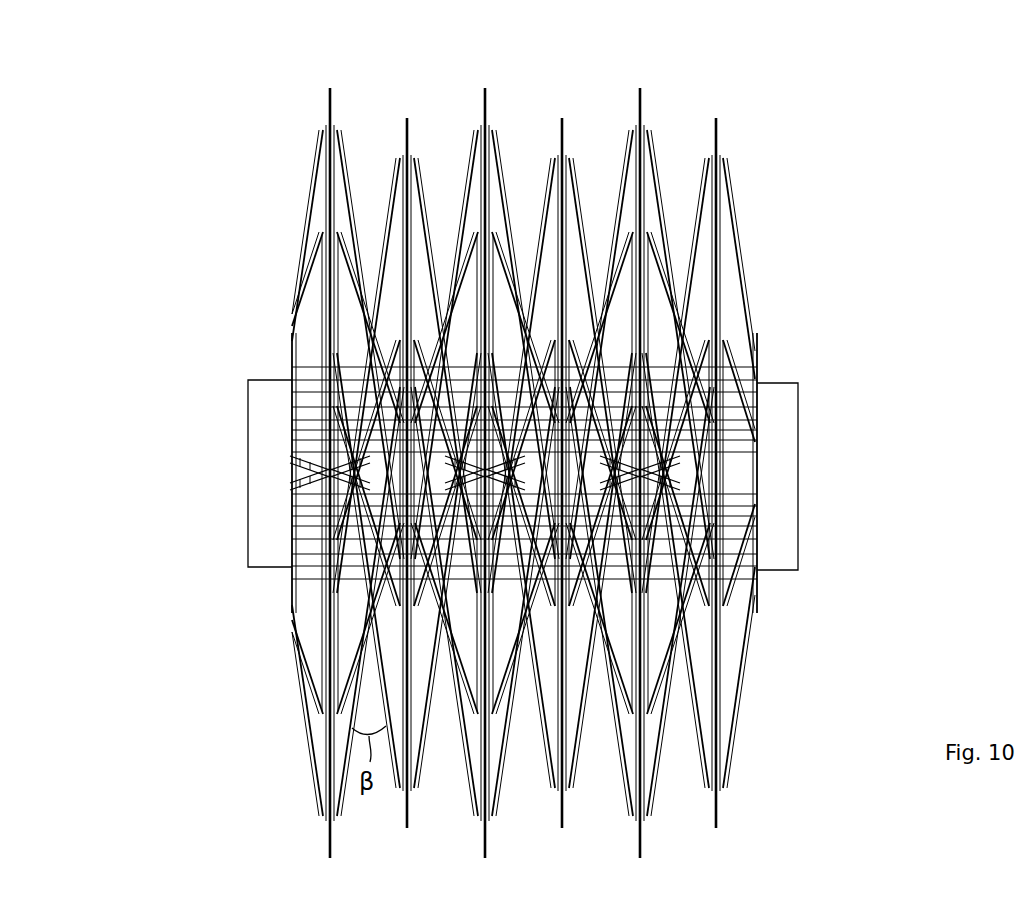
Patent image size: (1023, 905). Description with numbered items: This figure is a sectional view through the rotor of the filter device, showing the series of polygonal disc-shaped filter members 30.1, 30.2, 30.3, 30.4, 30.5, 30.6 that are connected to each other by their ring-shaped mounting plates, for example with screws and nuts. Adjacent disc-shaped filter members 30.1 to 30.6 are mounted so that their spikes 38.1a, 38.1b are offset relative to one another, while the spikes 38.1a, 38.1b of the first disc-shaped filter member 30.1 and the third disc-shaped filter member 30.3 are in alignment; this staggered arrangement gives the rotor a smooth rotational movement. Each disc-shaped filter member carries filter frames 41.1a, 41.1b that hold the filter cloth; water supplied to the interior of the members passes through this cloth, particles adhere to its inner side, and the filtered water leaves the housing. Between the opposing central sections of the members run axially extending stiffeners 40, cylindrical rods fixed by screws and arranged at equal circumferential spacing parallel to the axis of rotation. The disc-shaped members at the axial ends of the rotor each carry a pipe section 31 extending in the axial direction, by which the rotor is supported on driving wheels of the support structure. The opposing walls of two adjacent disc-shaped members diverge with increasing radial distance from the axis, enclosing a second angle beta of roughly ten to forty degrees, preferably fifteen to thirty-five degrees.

The first disc-shaped filter member 30.1 is at (717, 122).
The disc-shaped filter member 30.2 is at (641, 92).
The third disc-shaped filter member 30.3 is at (562, 122).
The disc-shaped filter member 30.4 is at (486, 92).
The disc-shaped filter member 30.5 is at (407, 122).
The disc-shaped filter member 30.6 is at (331, 92).
The filter frame 41.1a is at (737, 222).
The filter frame 41.1b is at (704, 198).
The spike 38.1a is at (746, 290).
The spike 38.1b is at (688, 325).
The stiffener 40 is at (739, 428).
The pipe section 31 is at (256, 555).